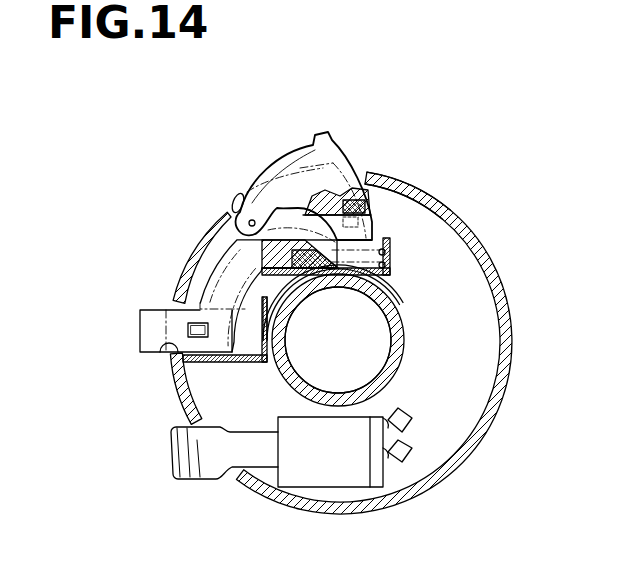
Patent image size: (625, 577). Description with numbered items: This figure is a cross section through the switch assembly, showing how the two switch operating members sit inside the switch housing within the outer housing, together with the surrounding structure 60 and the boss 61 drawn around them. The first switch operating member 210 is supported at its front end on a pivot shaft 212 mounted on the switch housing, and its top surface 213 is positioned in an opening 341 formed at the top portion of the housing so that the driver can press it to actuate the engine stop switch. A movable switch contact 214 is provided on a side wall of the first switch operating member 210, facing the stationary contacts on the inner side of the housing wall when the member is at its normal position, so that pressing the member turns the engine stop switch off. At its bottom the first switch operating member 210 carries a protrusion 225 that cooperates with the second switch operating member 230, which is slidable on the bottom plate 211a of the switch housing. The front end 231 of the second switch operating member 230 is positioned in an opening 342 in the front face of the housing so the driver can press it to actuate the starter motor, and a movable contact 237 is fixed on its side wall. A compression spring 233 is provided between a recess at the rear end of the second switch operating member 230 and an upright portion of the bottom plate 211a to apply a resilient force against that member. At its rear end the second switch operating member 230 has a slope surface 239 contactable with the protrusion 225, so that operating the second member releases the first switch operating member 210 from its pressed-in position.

The housing 60 is at (468, 216).
The bearing boss 61 is at (402, 362).
The first switch operating member 210 is at (342, 142).
The bottom plate 211a is at (247, 365).
The pivot shaft 212 is at (218, 230).
The top surface 213 is at (279, 163).
The movable switch contact 214 is at (417, 189).
The protrusion 225 is at (351, 272).
The second switch operating member 230 is at (233, 258).
The front end 231 is at (148, 332).
The compression spring 233 is at (389, 276).
The movable contact 237 is at (180, 324).
The slope surface 239 is at (318, 275).
The opening 341 is at (240, 200).
The opening 342 is at (161, 352).